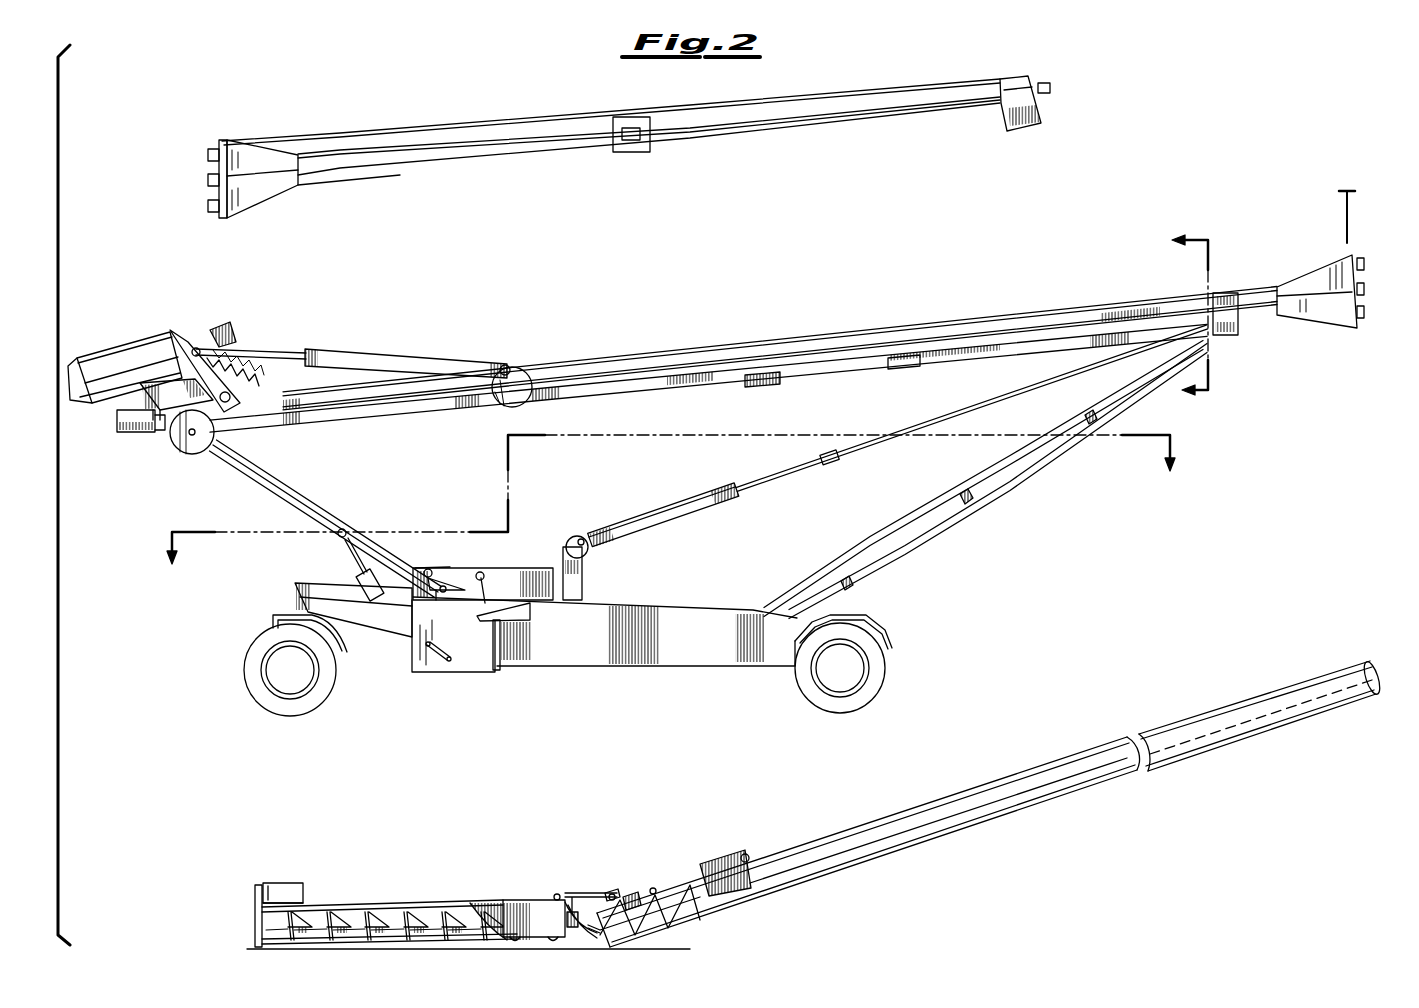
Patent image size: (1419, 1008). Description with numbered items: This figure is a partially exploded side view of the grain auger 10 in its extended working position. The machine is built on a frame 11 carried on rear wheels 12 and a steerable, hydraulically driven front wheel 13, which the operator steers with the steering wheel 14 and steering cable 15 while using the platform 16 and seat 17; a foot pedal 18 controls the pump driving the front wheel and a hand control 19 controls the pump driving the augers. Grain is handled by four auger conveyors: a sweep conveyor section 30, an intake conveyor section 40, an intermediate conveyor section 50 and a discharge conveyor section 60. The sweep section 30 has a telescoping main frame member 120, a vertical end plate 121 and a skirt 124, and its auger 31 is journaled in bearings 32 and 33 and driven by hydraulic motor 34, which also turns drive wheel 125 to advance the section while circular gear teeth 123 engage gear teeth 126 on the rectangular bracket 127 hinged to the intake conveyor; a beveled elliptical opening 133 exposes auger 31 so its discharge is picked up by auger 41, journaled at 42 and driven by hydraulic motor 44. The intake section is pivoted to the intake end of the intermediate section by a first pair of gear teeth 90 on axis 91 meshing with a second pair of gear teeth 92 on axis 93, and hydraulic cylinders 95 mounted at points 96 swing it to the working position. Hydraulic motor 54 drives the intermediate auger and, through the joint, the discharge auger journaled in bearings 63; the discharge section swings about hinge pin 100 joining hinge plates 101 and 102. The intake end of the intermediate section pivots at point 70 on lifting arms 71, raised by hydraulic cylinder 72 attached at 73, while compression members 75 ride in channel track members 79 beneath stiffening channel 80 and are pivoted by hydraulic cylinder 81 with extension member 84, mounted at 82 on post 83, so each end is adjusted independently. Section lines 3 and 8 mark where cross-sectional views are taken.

The grain auger 10 is at (1176, 148).
The frame 11 is at (690, 649).
The rear wheels 12 is at (885, 680).
The front wheel 13 is at (247, 656).
The steering wheel 14 is at (448, 578).
The steering cable 15 is at (380, 650).
The platform 16 is at (470, 662).
The seat 17 is at (515, 620).
The foot pedal 18 is at (432, 670).
The hand control 19 is at (488, 574).
The sweep conveyor section 30 is at (432, 890).
The auger 31 is at (405, 913).
The bearing 32 is at (256, 930).
The bearing 33 is at (592, 920).
The hydraulic motor 34 is at (290, 883).
The intake conveyor section 40 is at (900, 812).
The auger 41 is at (655, 888).
The bearing at intake end 42 is at (560, 912).
The hydraulic motor 44 is at (242, 340).
The intermediate conveyor section 50 is at (610, 352).
The hydraulic motor 54 is at (125, 434).
The discharge conveyor section 60 is at (803, 92).
The bearings 63 is at (1051, 84).
The pivot point 70 is at (187, 452).
The lifting arms 71 is at (325, 512).
The hydraulic cylinder 72 is at (353, 566).
The pivotal mounting 73 is at (345, 528).
The compression members 75 is at (930, 502).
The channel track members 79 is at (770, 388).
The stiffening channel 80 is at (803, 355).
The hydraulic cylinder 81 is at (677, 502).
The pivotal mounting 82 is at (578, 536).
The post 83 is at (585, 578).
The extension member 84 is at (850, 448).
The first spaced pair of circular gear teeth 90 is at (262, 347).
The common axis 91 is at (232, 404).
The second spaced pair of circular gear teeth 92 is at (218, 322).
The common horizontal axis 93 is at (172, 328).
The hydraulic cylinders 95 is at (425, 348).
The pivot points 96 is at (518, 366).
The hinge pin 100 is at (1340, 213).
The hinge plate 101 is at (1326, 278).
The hinge plate 102 is at (263, 185).
The main frame member 120 is at (440, 906).
The vertical end plate 121 is at (255, 907).
The circular gear teeth 123 is at (572, 910).
The skirt 124 is at (500, 893).
The drive wheel 125 is at (258, 948).
The gear teeth 126 is at (612, 893).
The rectangular bracket 127 is at (720, 862).
The beveled elliptical opening 133 is at (675, 900).
The section line 3- 3 is at (672, 515).
The section line 8- 8 is at (1177, 321).